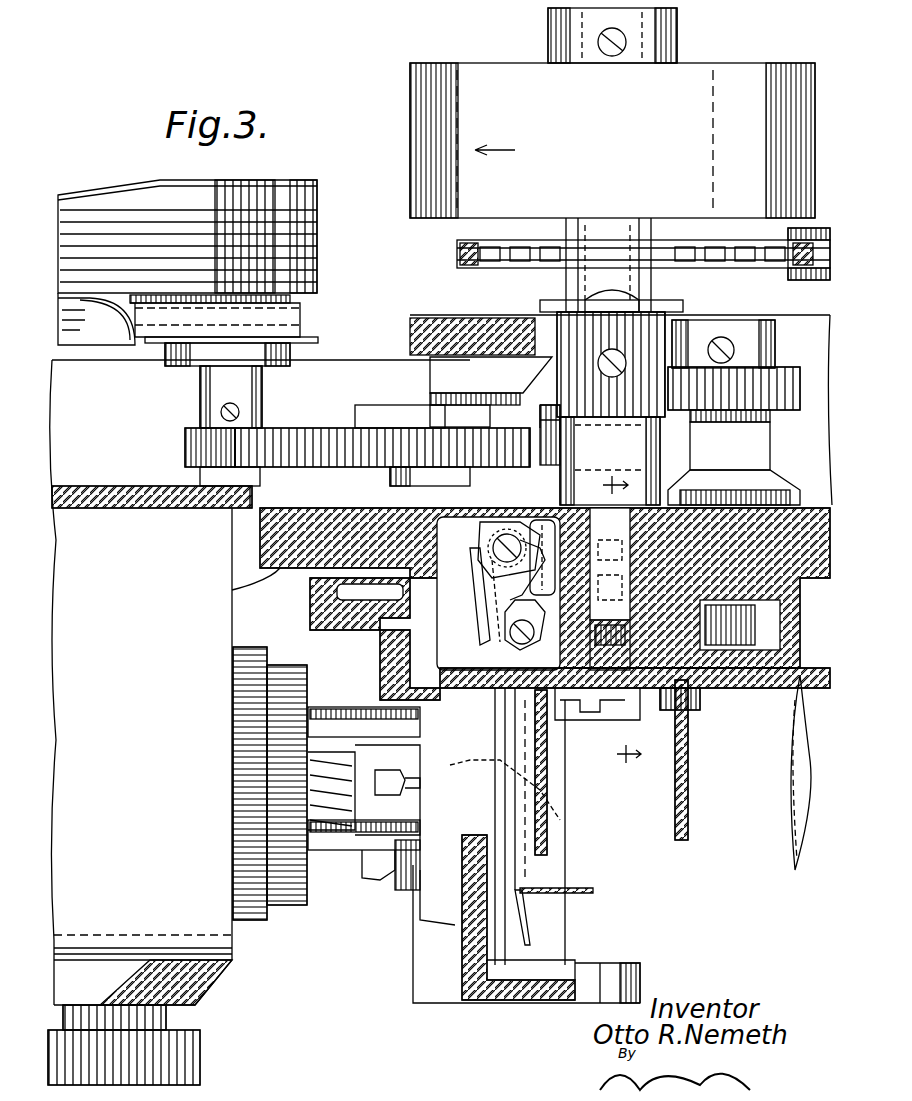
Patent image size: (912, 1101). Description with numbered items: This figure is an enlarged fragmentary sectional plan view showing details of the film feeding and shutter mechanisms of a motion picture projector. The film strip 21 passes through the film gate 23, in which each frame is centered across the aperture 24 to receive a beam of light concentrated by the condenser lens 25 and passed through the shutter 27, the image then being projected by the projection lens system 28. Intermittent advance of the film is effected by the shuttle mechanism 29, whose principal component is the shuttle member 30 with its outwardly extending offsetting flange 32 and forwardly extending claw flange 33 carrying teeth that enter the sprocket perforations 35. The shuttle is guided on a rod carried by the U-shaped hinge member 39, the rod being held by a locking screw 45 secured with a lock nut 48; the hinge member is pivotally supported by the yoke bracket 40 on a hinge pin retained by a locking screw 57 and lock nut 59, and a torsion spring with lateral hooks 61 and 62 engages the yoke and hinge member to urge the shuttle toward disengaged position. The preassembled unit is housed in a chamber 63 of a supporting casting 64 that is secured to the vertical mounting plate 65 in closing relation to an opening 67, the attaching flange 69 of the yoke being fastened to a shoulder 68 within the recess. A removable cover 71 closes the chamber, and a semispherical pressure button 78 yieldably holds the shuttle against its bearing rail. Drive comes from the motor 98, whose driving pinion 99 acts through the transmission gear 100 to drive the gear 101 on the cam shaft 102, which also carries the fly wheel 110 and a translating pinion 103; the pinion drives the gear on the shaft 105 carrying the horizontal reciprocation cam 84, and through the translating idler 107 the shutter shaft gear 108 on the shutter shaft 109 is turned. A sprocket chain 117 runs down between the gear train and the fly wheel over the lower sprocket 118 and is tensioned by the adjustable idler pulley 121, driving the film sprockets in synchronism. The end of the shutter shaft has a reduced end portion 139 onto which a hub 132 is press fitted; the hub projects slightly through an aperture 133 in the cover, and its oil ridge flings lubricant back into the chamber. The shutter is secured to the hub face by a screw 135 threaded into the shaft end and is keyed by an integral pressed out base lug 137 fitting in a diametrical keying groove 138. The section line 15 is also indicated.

The fly wheel 110 is at (410, 132).
The cam shaft 102 is at (578, 283).
The sprocket chain 117 is at (470, 240).
The lower sprocket 118 is at (505, 250).
The adjustable tensioning idler pulley 121 is at (790, 234).
The shutter shaft gear 108 is at (655, 345).
The translating idler 107 is at (775, 400).
The shutter shaft 109 is at (600, 505).
The section line 15 is at (622, 626).
The translating pinion 103 is at (530, 376).
The gear 101 is at (552, 420).
The motor 98 is at (135, 205).
The driving pinion 99 is at (190, 452).
The transmission gear 100 is at (302, 428).
The vertical mounting plate 65 is at (130, 490).
The opening 67 is at (262, 500).
The supporting casting 64 is at (262, 530).
The chamber 63 is at (475, 572).
The lock nut 59 is at (487, 537).
The locking screw 57 is at (497, 525).
The lateral hook 61 is at (535, 525).
The yoke bracket 40 is at (548, 520).
The lateral hook 62 is at (470, 548).
The hinge member 39 is at (478, 588).
The attaching flange 69 is at (545, 575).
The lock nut 48 is at (523, 620).
The shuttle member 30 is at (498, 638).
The locking screw 45 is at (503, 622).
The offsetting flange 32 is at (500, 668).
The shuttle mechanism 29 is at (432, 647).
The shoulder 68 is at (585, 570).
The reduced end portion 139 is at (610, 625).
The hub 132 is at (700, 618).
The shaft 105 is at (732, 640).
The cover 71 is at (790, 672).
The horizontal reciprocation cam 84 is at (708, 688).
The pressure button 78 is at (700, 700).
The base lug 137 is at (560, 700).
The aperture 133 is at (568, 700).
The keying groove 138 is at (640, 700).
The screw 135 is at (630, 700).
The projection lens system 28 is at (281, 917).
The sprocket perforations 35 is at (445, 738).
The film strip 21 is at (452, 805).
The film gate 23 is at (392, 884).
The claw flange 33 is at (555, 764).
The aperture 24 is at (490, 820).
The shutter 27 is at (680, 840).
The condenser lens 25 is at (798, 830).